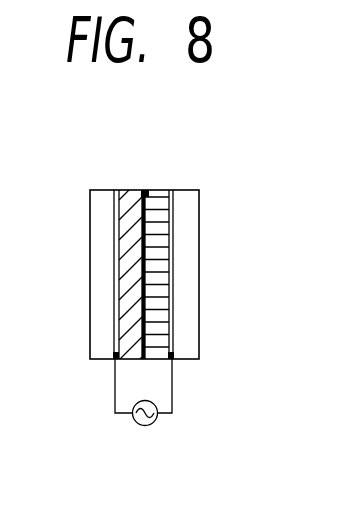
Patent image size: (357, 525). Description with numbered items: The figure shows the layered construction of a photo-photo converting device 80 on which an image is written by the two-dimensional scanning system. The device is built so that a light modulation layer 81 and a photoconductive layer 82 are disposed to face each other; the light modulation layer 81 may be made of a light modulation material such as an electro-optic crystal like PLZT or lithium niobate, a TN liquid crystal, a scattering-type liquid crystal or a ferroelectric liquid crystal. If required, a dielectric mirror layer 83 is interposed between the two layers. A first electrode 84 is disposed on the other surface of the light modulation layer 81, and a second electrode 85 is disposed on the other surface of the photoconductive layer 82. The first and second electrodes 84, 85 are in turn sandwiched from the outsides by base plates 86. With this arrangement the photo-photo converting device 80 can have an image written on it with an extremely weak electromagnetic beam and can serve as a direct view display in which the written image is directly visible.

The photo-photo converting device 80 is at (208, 277).
The light modulation layer 81 is at (157, 200).
The photoconductive layer 82 is at (122, 190).
The dielectric mirror layer 83 is at (144, 190).
The first electrode 84 is at (177, 363).
The second electrode 85 is at (113, 362).
The base plates 86 is at (90, 207).